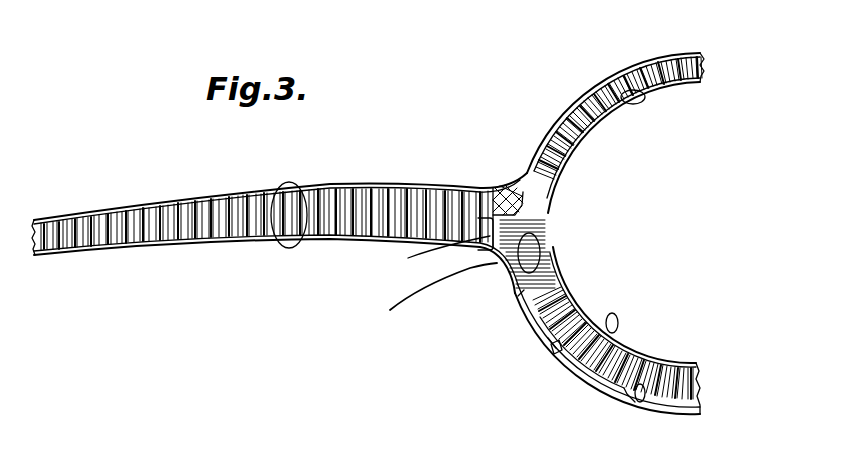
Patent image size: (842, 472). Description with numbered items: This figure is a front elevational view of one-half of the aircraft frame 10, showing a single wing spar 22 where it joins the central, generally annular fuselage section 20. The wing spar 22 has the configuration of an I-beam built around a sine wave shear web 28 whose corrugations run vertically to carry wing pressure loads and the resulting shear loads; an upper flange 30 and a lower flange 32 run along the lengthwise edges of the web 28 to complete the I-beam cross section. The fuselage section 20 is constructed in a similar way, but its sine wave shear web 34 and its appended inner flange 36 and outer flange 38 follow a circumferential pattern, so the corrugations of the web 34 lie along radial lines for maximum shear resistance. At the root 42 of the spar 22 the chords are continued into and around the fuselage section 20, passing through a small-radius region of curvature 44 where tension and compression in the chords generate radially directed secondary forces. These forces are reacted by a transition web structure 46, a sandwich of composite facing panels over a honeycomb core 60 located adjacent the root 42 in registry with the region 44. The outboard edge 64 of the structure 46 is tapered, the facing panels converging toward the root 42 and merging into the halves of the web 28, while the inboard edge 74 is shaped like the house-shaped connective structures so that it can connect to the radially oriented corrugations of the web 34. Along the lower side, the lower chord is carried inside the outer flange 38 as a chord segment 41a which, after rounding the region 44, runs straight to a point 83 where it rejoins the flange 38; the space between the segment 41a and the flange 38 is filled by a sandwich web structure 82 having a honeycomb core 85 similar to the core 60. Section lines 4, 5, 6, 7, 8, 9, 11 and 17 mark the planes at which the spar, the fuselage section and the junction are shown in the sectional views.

The frame 10 is at (471, 107).
The fuselage section 20 is at (648, 54).
The wing spar 22 is at (152, 199).
The sine wave shear web 28 is at (143, 225).
The flange 30 is at (313, 238).
The flange 32 is at (288, 182).
The sine wave shear web 34 is at (682, 366).
The inner flange 36 is at (628, 73).
The outer flange 38 is at (590, 87).
The chord segment 41a is at (553, 363).
The root 42 is at (433, 293).
The region of curvature 44 is at (520, 183).
The transition web structure 46 is at (478, 261).
The honeycomb core 60 is at (570, 194).
The outboard edge 64 is at (438, 254).
The edge 74 is at (522, 292).
The sandwich web structure 82 is at (547, 350).
The point 83 is at (617, 398).
The honeycomb core 85 is at (577, 281).
The section line 4- 4 is at (50, 265).
The section line 5- 5 is at (111, 256).
The section line 6- 6 is at (199, 207).
The section line 7- 7 is at (362, 252).
The section line 8- 8 is at (512, 168).
The section line 9- 9 is at (476, 222).
The section line 11- 11 is at (537, 132).
The section line 17- 17 is at (491, 181).